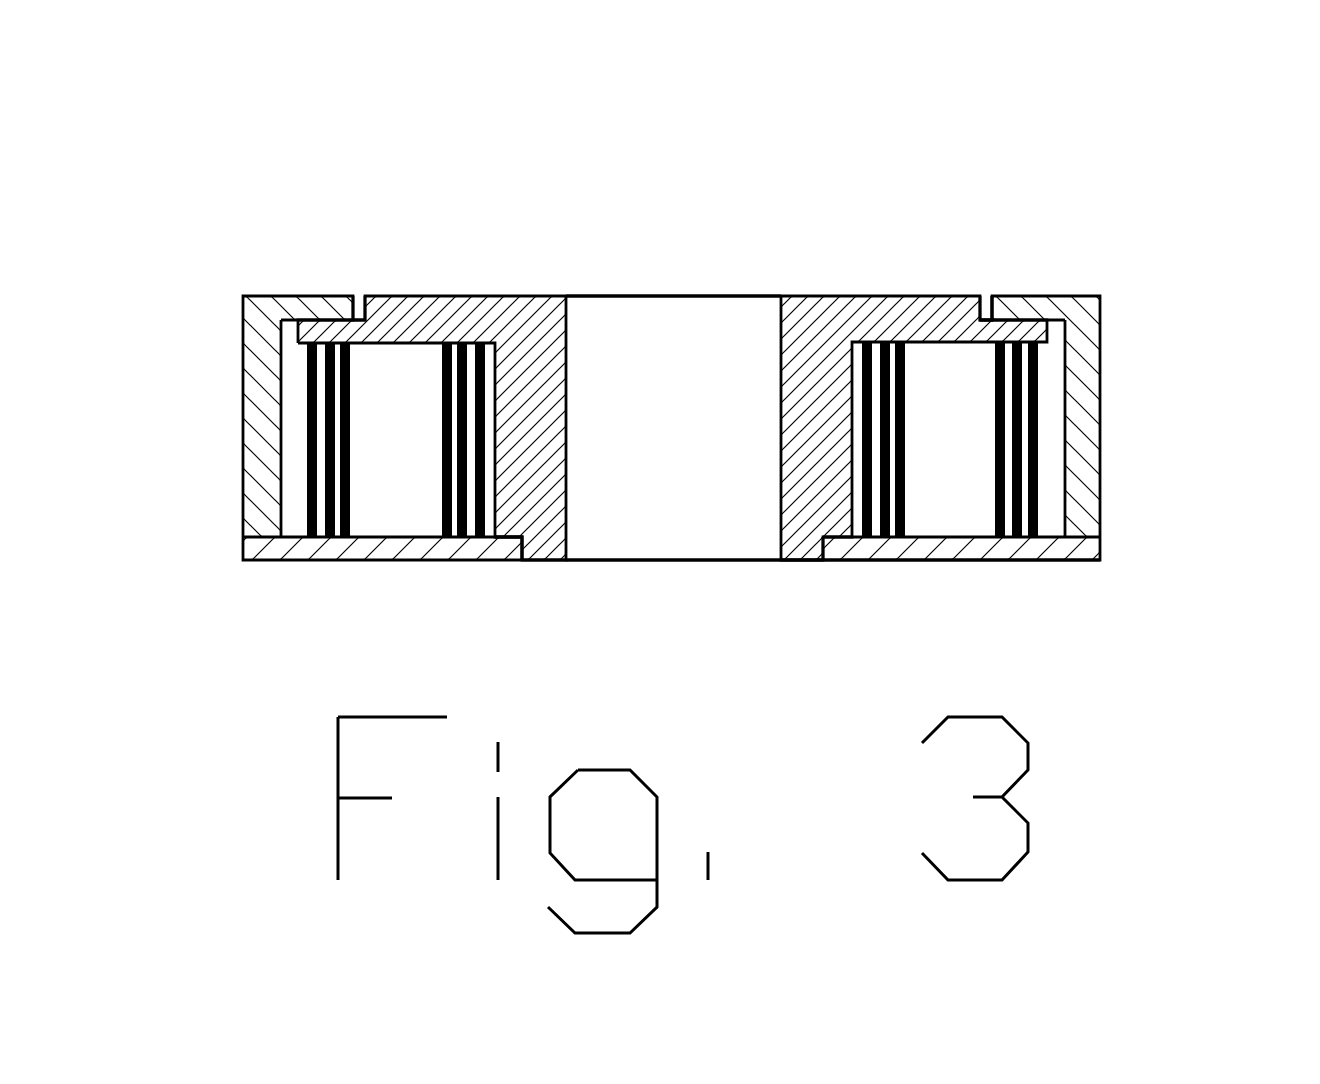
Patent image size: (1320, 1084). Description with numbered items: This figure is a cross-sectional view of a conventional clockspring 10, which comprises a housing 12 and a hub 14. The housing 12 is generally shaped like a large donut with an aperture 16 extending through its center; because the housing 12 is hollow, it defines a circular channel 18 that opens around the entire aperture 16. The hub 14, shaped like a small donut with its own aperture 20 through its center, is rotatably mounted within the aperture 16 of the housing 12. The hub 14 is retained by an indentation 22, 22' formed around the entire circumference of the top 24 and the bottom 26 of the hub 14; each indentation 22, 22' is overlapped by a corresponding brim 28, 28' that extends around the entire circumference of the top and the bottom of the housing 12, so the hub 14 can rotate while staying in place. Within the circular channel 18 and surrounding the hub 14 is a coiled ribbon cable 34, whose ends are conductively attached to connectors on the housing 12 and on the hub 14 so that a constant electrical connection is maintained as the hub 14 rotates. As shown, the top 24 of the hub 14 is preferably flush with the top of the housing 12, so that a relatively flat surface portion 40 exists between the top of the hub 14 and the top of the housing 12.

The clockspring 10 is at (193, 212).
The housing 12 is at (1082, 438).
The hub 14 is at (840, 310).
The aperture 16 is at (822, 547).
The circular channel 18 is at (283, 443).
The aperture 20 is at (568, 433).
The indentation 22 is at (396, 229).
The indentation 22' is at (382, 599).
The top of the hub 24 is at (522, 297).
The bottom of the hub 26 is at (793, 557).
The brim 28 is at (1060, 241).
The brim 28' is at (567, 599).
The coiled ribbon cable 34 is at (888, 457).
The flat surface portion 40 is at (935, 296).